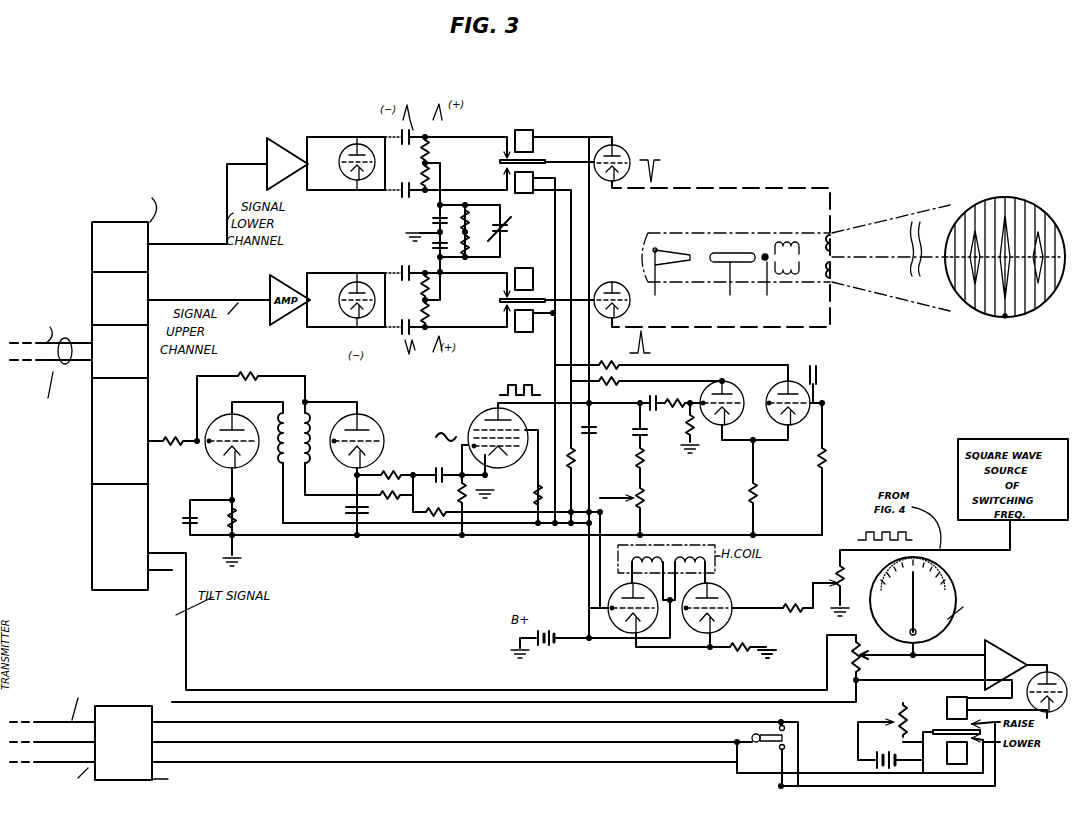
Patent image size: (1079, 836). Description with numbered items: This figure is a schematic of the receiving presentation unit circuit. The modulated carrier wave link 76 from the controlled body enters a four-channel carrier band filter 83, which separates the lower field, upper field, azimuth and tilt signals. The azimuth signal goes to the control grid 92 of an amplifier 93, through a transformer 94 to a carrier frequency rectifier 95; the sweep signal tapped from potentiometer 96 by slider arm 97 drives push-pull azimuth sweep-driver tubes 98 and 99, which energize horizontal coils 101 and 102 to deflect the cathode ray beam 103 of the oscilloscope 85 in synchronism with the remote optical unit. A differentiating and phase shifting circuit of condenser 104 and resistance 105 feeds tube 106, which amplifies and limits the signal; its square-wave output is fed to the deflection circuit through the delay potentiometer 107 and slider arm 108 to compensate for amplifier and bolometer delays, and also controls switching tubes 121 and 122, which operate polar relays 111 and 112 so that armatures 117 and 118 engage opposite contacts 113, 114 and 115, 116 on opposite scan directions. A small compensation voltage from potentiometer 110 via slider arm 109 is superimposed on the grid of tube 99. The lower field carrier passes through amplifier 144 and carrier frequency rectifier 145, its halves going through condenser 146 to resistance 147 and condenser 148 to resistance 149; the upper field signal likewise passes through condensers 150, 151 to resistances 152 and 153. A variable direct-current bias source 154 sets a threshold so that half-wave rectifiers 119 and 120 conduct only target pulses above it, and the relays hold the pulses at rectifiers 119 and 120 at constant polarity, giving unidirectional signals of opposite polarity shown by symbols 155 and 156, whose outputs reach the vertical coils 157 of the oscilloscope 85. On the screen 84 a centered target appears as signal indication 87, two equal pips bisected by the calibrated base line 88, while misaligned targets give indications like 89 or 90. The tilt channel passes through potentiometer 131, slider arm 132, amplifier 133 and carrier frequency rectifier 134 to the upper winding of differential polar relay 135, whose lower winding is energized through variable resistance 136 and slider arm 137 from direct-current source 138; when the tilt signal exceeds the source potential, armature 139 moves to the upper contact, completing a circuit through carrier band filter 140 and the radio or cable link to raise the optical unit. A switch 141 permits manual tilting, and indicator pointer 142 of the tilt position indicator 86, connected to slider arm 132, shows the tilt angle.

The modulated carrier wave link 76 is at (41, 365).
The carrier band filter 83 is at (121, 585).
The screen 84 is at (1030, 225).
The oscilloscope 85 is at (893, 284).
The tilt position indicator 86 is at (875, 617).
The signal indication 87 is at (1008, 225).
The base line 88 is at (1008, 307).
The target indication 89 is at (975, 217).
The target indication 90 is at (1040, 240).
The control grid 92 is at (238, 460).
The amplifier 93 is at (222, 420).
The transformer 94 is at (294, 418).
The carrier frequency rectifier 95 is at (375, 428).
The potentiometer 96 is at (354, 510).
The potentiometer slider arm 97 is at (420, 516).
The azimuth sweep-driver tube 98 is at (622, 628).
The azimuth sweep-driver tube 99 is at (729, 603).
The horizontal coil 101 is at (782, 240).
The horizontal coil 102 is at (790, 278).
The cathode ray beam 103 is at (882, 257).
The condenser 104 is at (436, 470).
The resistance 105 is at (459, 490).
The tube 106 is at (475, 421).
The delay potentiometer 107 is at (648, 498).
The potentiometer slider arm 108 is at (631, 497).
The potentiometer slider arm 109 is at (772, 605).
The potentiometer 110 is at (846, 588).
The polar relay 111 is at (532, 268).
The polar relay 112 is at (535, 131).
The relay contact 113 is at (507, 295).
The relay contact 114 is at (507, 154).
The relay contact 115 is at (513, 318).
The relay contact 116 is at (505, 170).
The relay armature 117 is at (500, 301).
The relay armature 118 is at (558, 152).
The half-wave rectifier 119 is at (630, 302).
The half-wave rectifier 120 is at (628, 148).
The switching tube 121 is at (716, 426).
The switching tube 122 is at (792, 427).
The potentiometer 131 is at (864, 686).
The potentiometer slider arm 132 is at (890, 662).
The amplifier 133 is at (995, 641).
The carrier frequency rectifier 134 is at (1056, 675).
The differential polar relay 135 is at (947, 693).
The variable resistance 136 is at (897, 706).
The potentiometer slider arm 137 is at (868, 722).
The direct-current source 138 is at (873, 760).
The armature 139 is at (937, 730).
The carrier band filter 140 is at (137, 713).
The switch 141 is at (768, 730).
The indicator pointer 142 is at (925, 603).
The amplifier 144 is at (275, 135).
The carrier frequency rectifier 145 is at (363, 145).
The condenser 146 is at (405, 151).
The resistance 147 is at (431, 153).
The condenser 148 is at (400, 192).
The resistance 149 is at (431, 178).
The capacitor 150 is at (400, 330).
The capacitor 151 is at (400, 272).
The resistance 152 is at (422, 285).
The resistance 153 is at (420, 312).
The variable direct-current bias source 154 is at (508, 237).
The symbol 155 is at (649, 346).
The symbol 156 is at (663, 166).
The vertical coils 157 is at (838, 242).